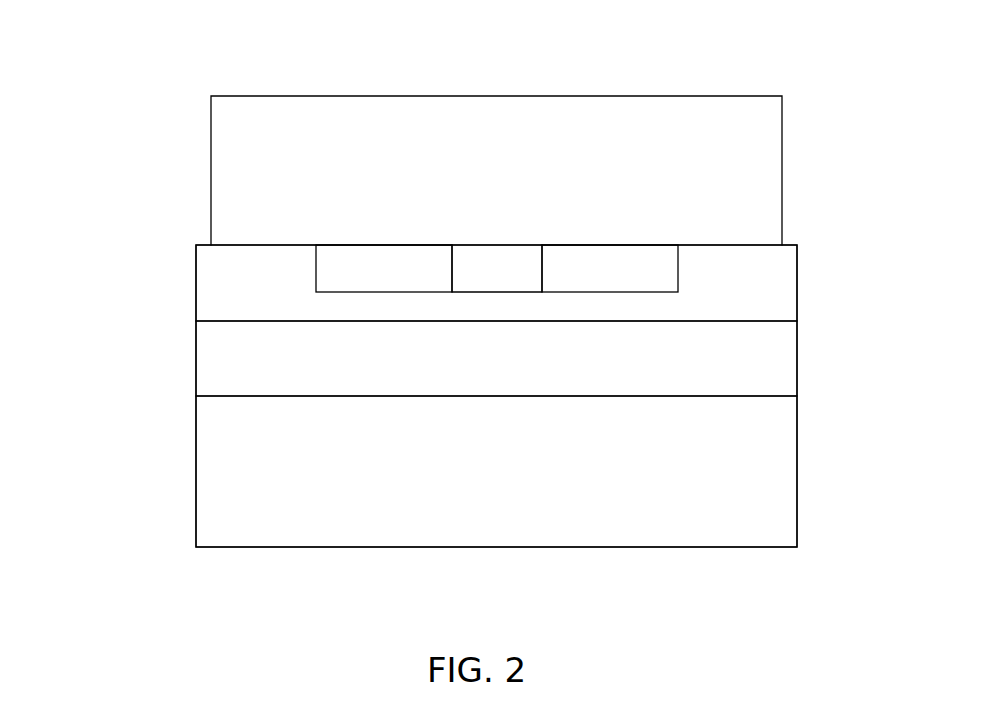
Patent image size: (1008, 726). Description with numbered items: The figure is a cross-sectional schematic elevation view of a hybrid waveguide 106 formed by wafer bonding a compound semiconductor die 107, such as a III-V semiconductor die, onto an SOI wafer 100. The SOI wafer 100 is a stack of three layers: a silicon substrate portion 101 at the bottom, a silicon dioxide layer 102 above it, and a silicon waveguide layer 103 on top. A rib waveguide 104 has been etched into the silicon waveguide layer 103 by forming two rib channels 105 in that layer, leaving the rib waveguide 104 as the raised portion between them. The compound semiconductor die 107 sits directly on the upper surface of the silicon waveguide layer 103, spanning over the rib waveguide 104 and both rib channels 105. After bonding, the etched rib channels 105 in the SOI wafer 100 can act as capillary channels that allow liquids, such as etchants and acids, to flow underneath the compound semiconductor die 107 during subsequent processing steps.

The SOI wafer 100 is at (677, 517).
The silicon substrate portion 101 is at (225, 502).
The silicon dioxide layer 102 is at (225, 350).
The silicon waveguide layer 103 is at (225, 277).
The rib waveguide 104 is at (497, 258).
The rib channels 105 is at (392, 276).
The hybrid waveguide 106 is at (122, 177).
The compound semiconductor die 107 is at (735, 127).